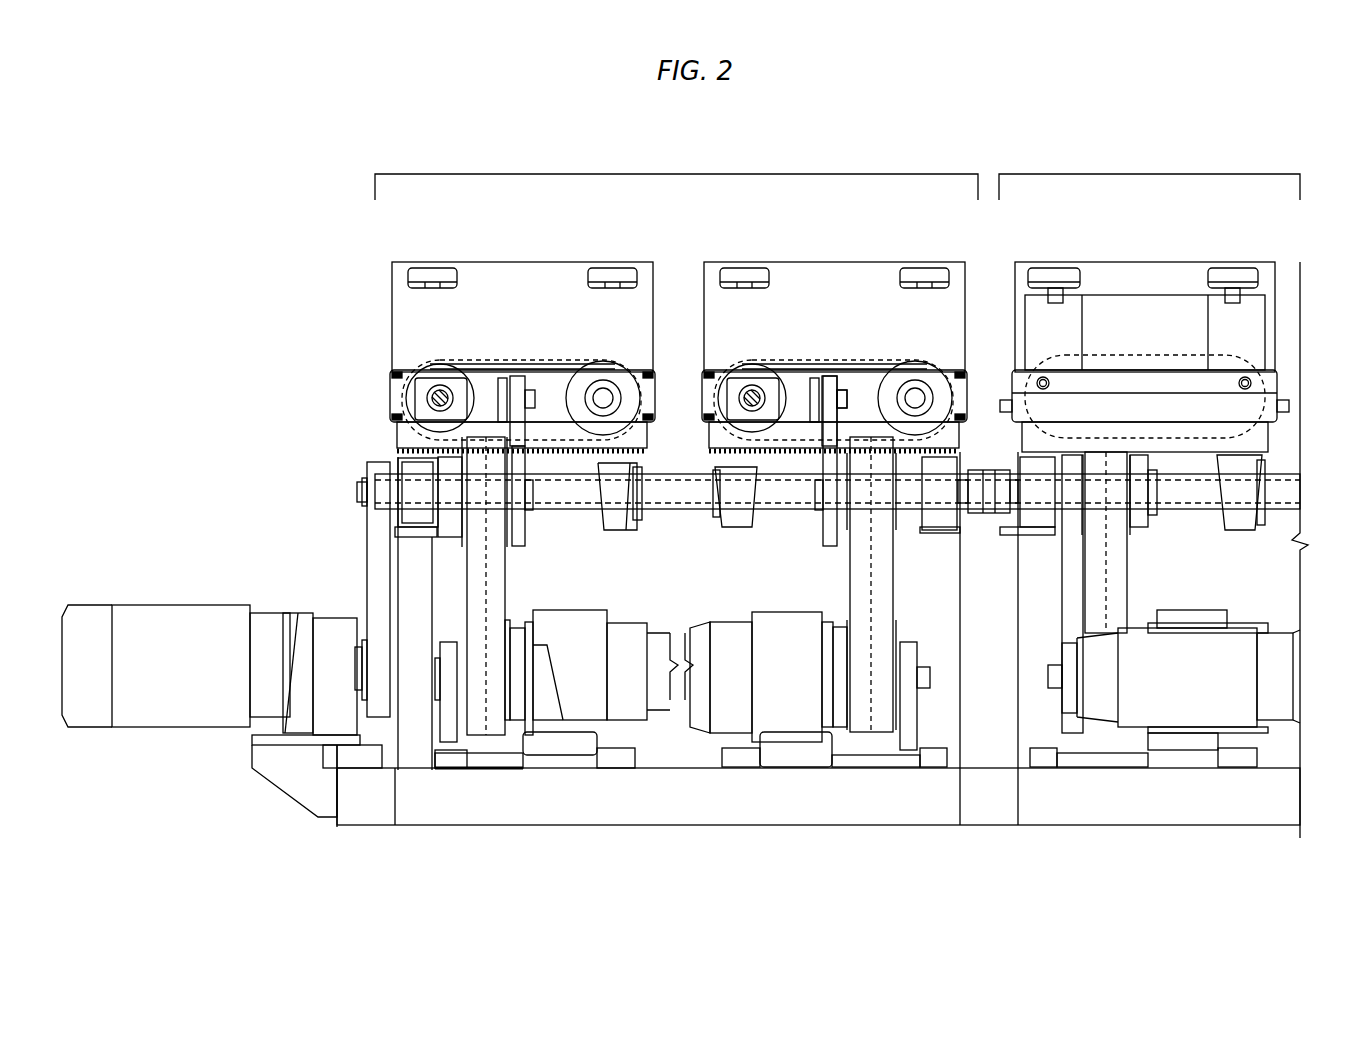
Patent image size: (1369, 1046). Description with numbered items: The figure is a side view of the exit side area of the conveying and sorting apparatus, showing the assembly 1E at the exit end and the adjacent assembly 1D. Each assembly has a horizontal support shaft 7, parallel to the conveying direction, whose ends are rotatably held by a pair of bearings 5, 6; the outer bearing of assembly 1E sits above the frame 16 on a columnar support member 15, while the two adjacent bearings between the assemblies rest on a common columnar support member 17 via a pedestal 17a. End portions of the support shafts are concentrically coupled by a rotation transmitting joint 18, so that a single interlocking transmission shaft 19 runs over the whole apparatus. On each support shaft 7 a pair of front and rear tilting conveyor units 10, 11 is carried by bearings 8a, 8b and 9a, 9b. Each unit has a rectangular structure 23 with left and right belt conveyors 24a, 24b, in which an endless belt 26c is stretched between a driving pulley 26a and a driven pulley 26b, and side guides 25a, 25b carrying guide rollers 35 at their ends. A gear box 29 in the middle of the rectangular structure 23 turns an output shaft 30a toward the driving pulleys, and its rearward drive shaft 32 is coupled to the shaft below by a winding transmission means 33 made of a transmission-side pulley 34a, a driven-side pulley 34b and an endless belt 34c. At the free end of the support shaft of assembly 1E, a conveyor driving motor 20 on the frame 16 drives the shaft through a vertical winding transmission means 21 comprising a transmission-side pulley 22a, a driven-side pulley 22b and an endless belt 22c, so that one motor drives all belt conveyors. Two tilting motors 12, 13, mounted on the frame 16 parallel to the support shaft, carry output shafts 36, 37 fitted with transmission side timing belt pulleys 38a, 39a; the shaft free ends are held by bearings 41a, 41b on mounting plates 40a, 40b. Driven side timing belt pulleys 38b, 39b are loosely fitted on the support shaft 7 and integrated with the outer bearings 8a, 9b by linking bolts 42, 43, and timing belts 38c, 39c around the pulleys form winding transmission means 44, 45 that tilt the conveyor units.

The assembly 1E is at (676, 173).
The assembly 1D is at (1149, 173).
The tilting conveyor unit 10 is at (790, 256).
The tilting conveyor unit 11 is at (463, 256).
The guide roller 35 is at (600, 278).
The belt conveyor 24b is at (718, 355).
The belt conveyor 24a is at (1228, 352).
The side guide 25a is at (1112, 332).
The side guide 25b is at (493, 314).
The driving pulley 26a is at (440, 378).
The driven pulley 26b is at (622, 372).
The endless belt 26c is at (478, 364).
The gear box 29 is at (415, 385).
The output shaft 30a is at (392, 388).
The drive shaft 32 is at (517, 376).
The transmission-side pulley 34a is at (530, 392).
The rectangular structure 23 is at (392, 409).
The bearing 6 is at (415, 455).
The support shaft 7 is at (1275, 490).
The bearing 8a is at (905, 495).
The bearing 8b is at (735, 498).
The bearing 9a is at (1240, 493).
The bearing 9b is at (410, 470).
The transmission-side pulley 22a is at (355, 770).
The driven-side pulley 22b is at (365, 490).
The endless belt 22c is at (372, 548).
The columnar support member 15 is at (398, 579).
The winding transmission means 21 is at (368, 595).
The winding transmission means 33 is at (555, 450).
The driven-side pulley 34b is at (532, 500).
The endless belt 34c is at (522, 515).
The interlocking transmission shaft 19 is at (660, 516).
The linking bolt 43 is at (480, 440).
The linking bolt 42 is at (871, 584).
The driven side timing belt pulley 39b is at (435, 523).
The timing belt 39c is at (500, 594).
The transmission side timing belt pulley 39a is at (505, 720).
The bearing 5 is at (950, 490).
The pedestal 17a is at (978, 530).
The columnar support member 17 is at (970, 719).
The rotation transmitting joint 18 is at (1000, 518).
The winding transmission means 45 is at (465, 602).
The tilting motor 13 is at (557, 649).
The tilting motor 12 is at (767, 649).
The transmission side timing belt pulley 38a is at (845, 657).
The driven side timing belt pulley 38b is at (838, 545).
The timing belt 38c is at (878, 630).
The winding transmission means 44 is at (892, 604).
The frame 16 is at (715, 805).
The conveyor driving motor 20 is at (160, 670).
The bearing 41a is at (915, 720).
The bearing 41b is at (448, 730).
The output shaft 37 is at (478, 640).
The mounting plate 40a is at (892, 762).
The mounting plate 40b is at (505, 762).
The output shaft 36 is at (866, 745).